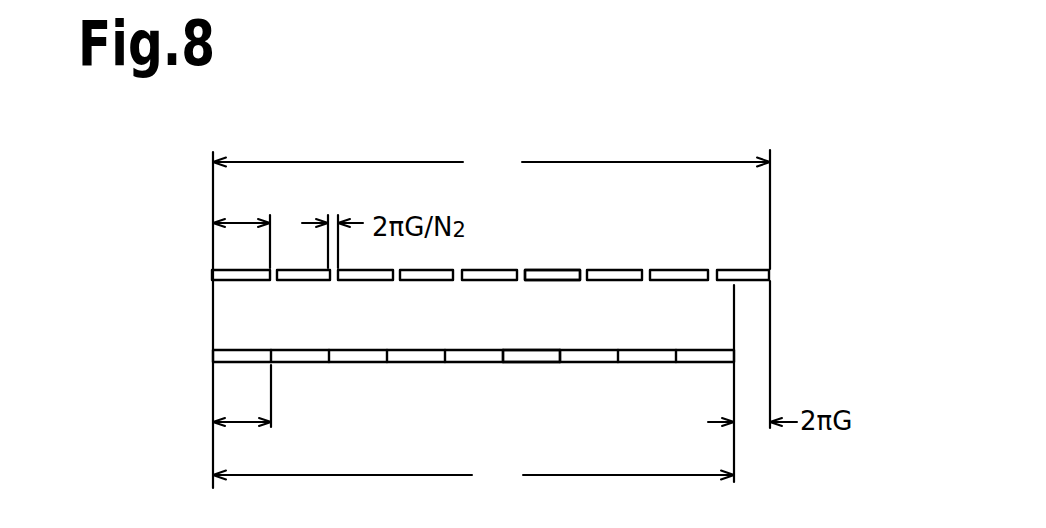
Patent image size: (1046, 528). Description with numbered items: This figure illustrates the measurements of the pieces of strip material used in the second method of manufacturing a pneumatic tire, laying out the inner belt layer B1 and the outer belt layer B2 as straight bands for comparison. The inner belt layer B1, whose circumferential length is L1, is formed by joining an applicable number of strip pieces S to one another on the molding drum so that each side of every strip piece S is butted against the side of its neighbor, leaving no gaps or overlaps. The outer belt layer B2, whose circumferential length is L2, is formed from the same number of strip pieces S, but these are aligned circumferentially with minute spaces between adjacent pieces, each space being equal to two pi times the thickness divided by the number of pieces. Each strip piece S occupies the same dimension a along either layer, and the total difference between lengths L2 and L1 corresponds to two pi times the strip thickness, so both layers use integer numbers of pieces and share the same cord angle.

The inner belt layer B1 is at (213, 356).
The outer belt layer B2 is at (212, 274).
The strip piece S is at (553, 269).
The circumferential length of the inner belt layer L1 is at (473, 474).
The circumferential length of the outer belt layer L2 is at (491, 161).
The strip piece length along the belt layer a is at (242, 309).